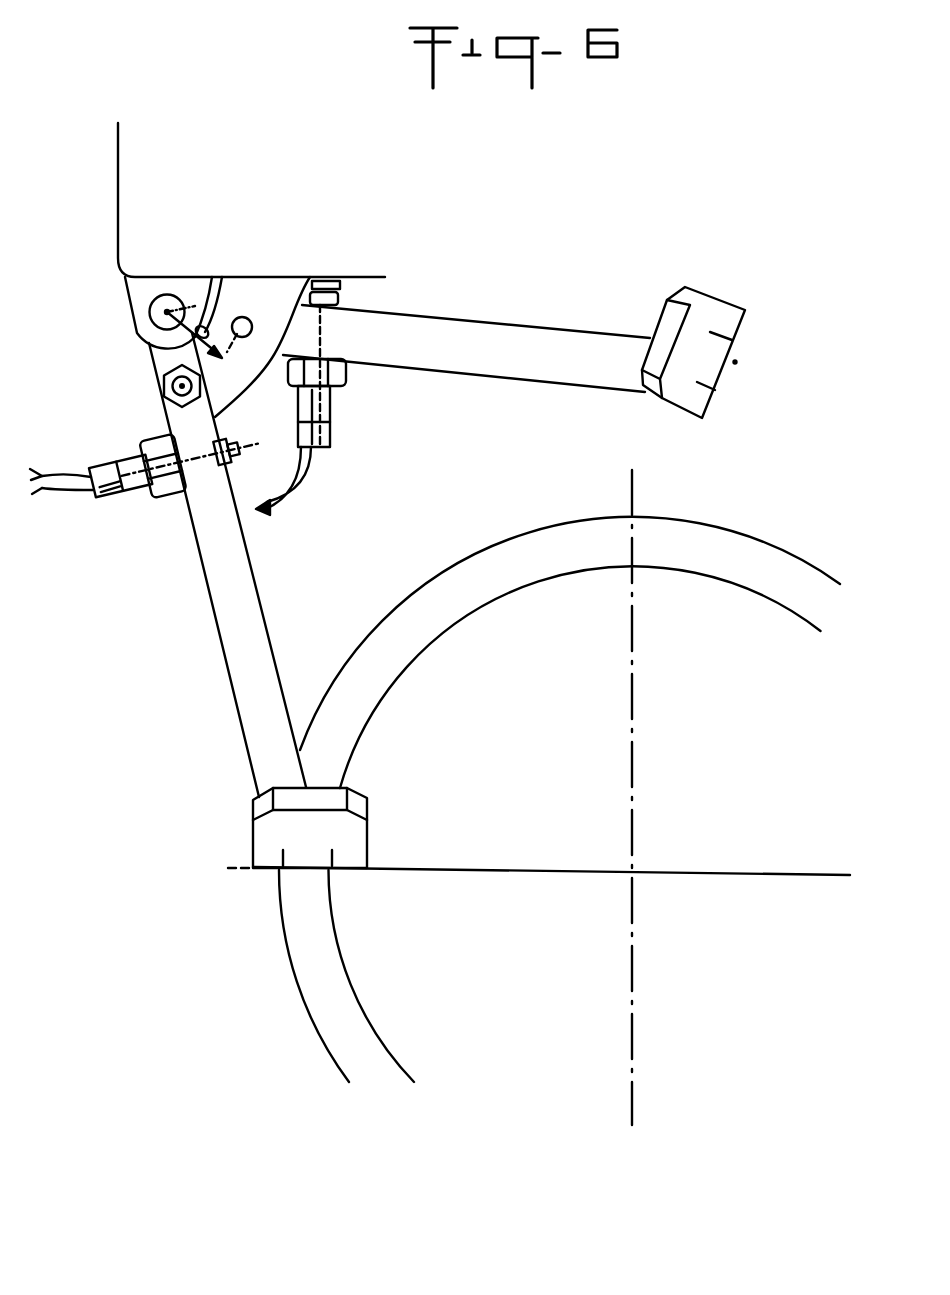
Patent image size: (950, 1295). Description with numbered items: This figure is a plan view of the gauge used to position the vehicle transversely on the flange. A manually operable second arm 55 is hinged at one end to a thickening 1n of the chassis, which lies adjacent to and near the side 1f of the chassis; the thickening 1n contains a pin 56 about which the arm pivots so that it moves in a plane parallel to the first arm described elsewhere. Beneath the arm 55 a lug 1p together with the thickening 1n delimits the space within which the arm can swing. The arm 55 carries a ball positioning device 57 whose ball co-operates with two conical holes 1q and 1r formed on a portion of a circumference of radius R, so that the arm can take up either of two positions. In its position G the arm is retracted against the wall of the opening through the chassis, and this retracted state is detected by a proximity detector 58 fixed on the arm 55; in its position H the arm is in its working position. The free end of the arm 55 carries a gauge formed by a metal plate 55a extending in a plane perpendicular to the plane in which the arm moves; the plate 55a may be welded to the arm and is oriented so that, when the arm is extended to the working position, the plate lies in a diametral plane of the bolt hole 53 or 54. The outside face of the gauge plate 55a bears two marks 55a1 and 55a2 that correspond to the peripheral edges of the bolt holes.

The side of the chassis 1f is at (130, 152).
The thickening 1n is at (135, 297).
The lug 1p is at (267, 305).
The conical hole 1q is at (213, 390).
The conical hole 1r is at (243, 316).
The bolt hole 53 is at (530, 588).
The bolt hole 54 is at (433, 580).
The second arm 55 is at (220, 613).
The metal plate 55a is at (687, 283).
The mark 55a1 is at (715, 397).
The mark 55a2 is at (733, 335).
The pin 56 is at (135, 324).
The ball positioning device 57 is at (182, 386).
The proximity detector 58 is at (127, 497).
The position G is at (727, 363).
The position H is at (250, 862).